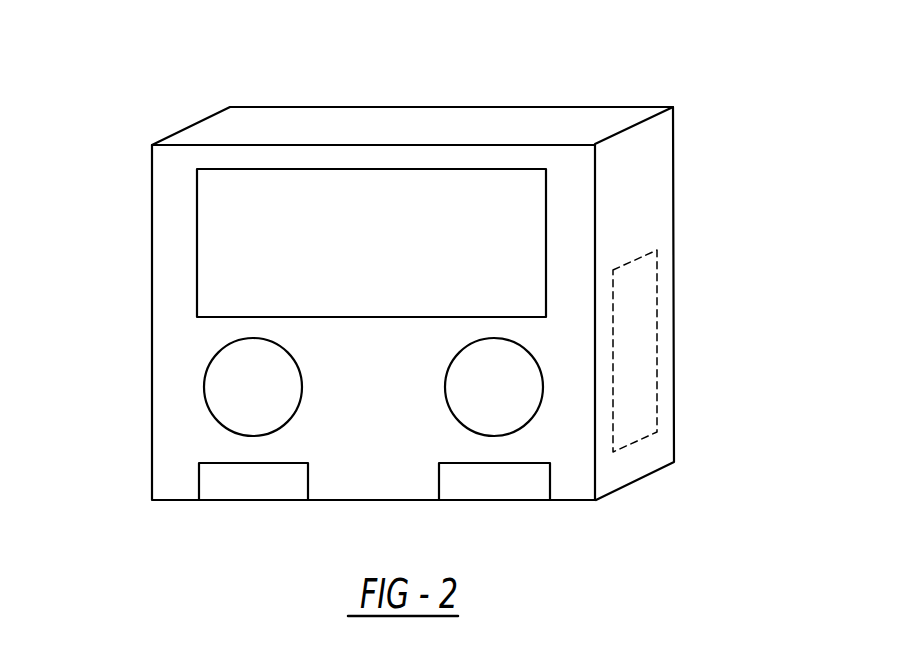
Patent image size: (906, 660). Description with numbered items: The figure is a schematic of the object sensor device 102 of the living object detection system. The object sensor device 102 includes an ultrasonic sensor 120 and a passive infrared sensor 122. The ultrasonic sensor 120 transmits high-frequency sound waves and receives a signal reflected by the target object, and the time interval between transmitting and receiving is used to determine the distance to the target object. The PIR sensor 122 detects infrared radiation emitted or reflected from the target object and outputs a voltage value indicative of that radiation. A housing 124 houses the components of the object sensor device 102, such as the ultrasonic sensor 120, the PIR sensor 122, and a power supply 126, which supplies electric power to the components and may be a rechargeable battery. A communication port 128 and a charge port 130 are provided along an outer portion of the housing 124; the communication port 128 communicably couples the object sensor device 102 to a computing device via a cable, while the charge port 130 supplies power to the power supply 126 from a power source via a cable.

The object sensor device 102 is at (176, 87).
The ultrasonic sensor 120 is at (205, 372).
The passive infrared (PIR) sensor 122 is at (197, 260).
The housing 124 is at (673, 163).
The power supply 126 is at (655, 345).
The communication port 128 is at (197, 475).
The charge port 130 is at (552, 482).